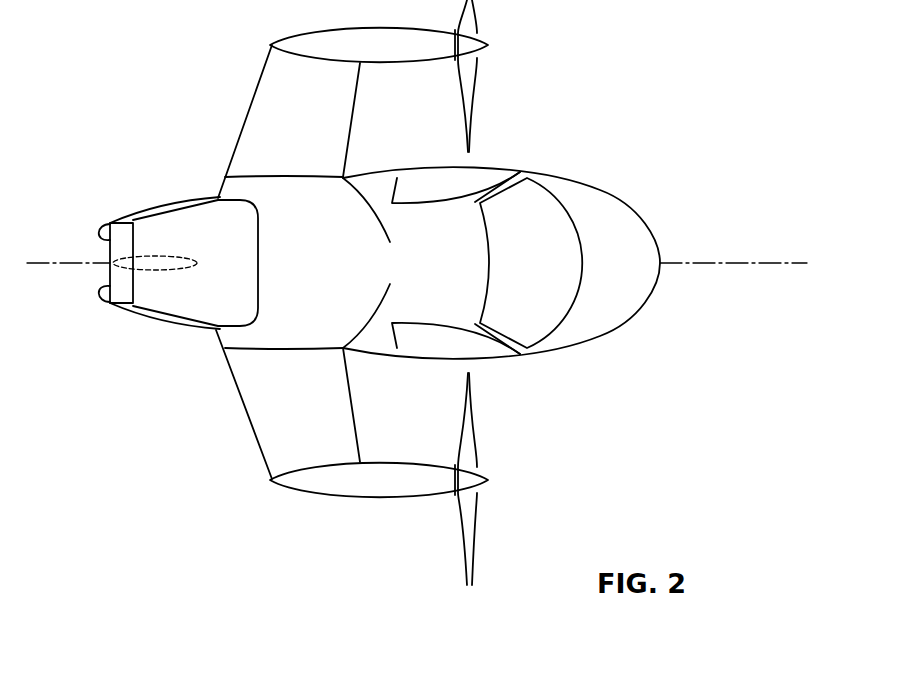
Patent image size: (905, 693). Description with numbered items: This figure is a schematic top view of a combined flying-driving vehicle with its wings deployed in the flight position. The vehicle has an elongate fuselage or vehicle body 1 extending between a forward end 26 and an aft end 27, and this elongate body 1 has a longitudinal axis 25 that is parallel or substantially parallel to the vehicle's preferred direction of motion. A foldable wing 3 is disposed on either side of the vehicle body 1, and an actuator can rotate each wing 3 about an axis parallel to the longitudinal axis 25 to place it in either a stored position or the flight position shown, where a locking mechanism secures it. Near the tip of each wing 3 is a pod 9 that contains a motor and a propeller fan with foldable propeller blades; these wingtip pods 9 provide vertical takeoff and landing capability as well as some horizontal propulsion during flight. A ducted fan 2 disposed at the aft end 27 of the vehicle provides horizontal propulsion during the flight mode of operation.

The fuselage/vehicle body 1 is at (598, 210).
The ducted fan 2 is at (200, 213).
The foldable wing 3 is at (262, 406).
The wingtip pod 9 is at (368, 487).
The longitudinal axis 25 is at (763, 265).
The forward end 26 is at (662, 288).
The aft end 27 is at (115, 207).